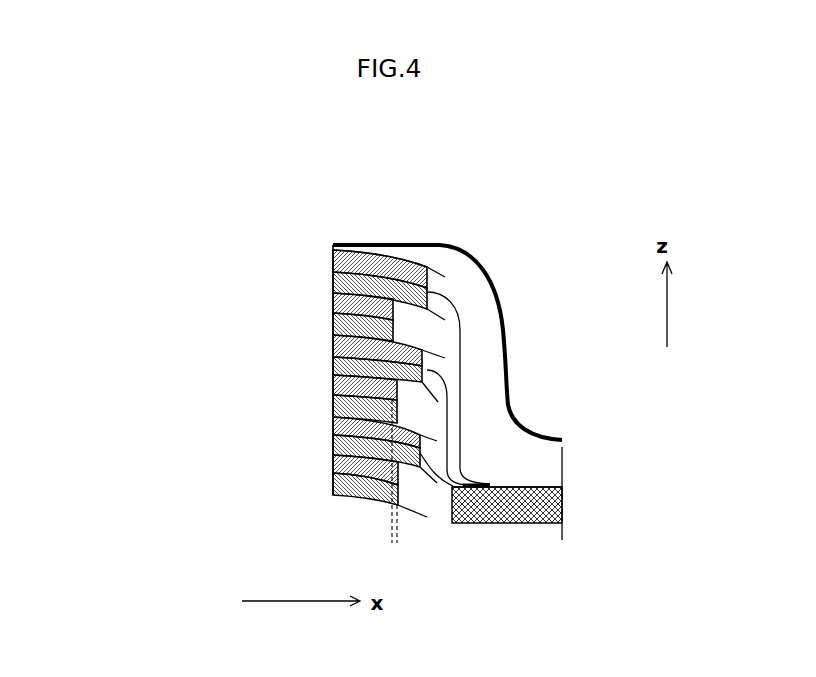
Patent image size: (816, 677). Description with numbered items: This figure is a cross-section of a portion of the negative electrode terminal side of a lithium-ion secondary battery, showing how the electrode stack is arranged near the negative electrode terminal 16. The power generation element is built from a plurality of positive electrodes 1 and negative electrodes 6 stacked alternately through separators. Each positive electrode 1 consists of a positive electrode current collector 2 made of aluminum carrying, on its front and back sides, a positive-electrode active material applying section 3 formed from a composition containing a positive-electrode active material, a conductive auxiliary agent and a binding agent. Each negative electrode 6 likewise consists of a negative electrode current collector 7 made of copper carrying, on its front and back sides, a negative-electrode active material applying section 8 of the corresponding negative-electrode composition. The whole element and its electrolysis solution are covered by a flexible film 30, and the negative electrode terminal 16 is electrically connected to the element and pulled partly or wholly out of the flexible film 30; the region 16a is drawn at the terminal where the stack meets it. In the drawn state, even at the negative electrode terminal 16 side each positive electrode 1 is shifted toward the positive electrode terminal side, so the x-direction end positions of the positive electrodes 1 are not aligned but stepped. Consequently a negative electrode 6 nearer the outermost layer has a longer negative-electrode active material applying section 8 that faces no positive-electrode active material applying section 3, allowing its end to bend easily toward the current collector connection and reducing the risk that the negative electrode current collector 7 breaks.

The positive electrode 1 is at (329, 403).
The positive electrode current collector 2 is at (329, 284).
The positive-electrode active material applying section 3 is at (333, 325).
The negative electrode 6 is at (390, 258).
The negative electrode current collector 7 is at (331, 263).
The negative-electrode active material applying section 8 is at (333, 242).
The flexible film 30 is at (482, 262).
The negative electrode terminal 16 is at (525, 500).
The mounting surface 16a is at (493, 525).